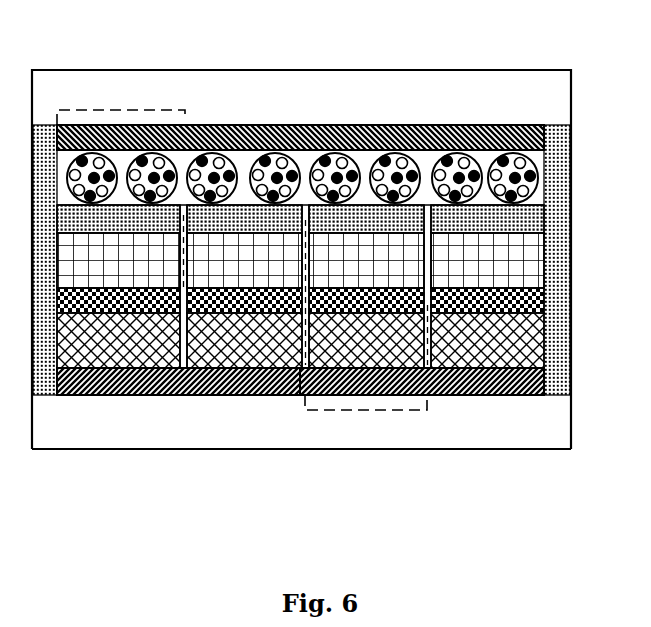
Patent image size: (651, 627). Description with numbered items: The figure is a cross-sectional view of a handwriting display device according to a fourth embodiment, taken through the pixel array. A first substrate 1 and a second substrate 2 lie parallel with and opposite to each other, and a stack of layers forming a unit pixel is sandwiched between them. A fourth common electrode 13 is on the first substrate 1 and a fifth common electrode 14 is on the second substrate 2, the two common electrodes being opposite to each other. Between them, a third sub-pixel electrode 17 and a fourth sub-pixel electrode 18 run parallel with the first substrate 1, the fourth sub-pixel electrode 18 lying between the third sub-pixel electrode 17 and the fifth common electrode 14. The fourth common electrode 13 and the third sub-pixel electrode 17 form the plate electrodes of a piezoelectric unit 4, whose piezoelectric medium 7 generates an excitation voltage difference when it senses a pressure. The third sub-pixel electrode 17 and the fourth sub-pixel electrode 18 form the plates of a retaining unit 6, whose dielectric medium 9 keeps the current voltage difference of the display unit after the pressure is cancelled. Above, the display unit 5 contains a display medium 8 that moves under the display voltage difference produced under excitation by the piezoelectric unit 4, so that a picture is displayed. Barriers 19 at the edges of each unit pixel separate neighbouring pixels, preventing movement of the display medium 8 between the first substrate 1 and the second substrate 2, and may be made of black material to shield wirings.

The first substrate 1 is at (423, 422).
The second substrate 2 is at (355, 88).
The piezoelectric unit 4 is at (370, 410).
The display unit 5 is at (80, 110).
The retaining unit 6 is at (262, 125).
The piezoelectric medium 7 is at (490, 397).
The display medium 8 is at (158, 157).
The dielectric medium 9 is at (72, 265).
The fourth common electrode 13 is at (228, 397).
The fifth common electrode 14 is at (422, 123).
The third sub-pixel electrode 17 is at (150, 315).
The fourth sub-pixel electrode 18 is at (480, 193).
The barrier 19 is at (557, 397).